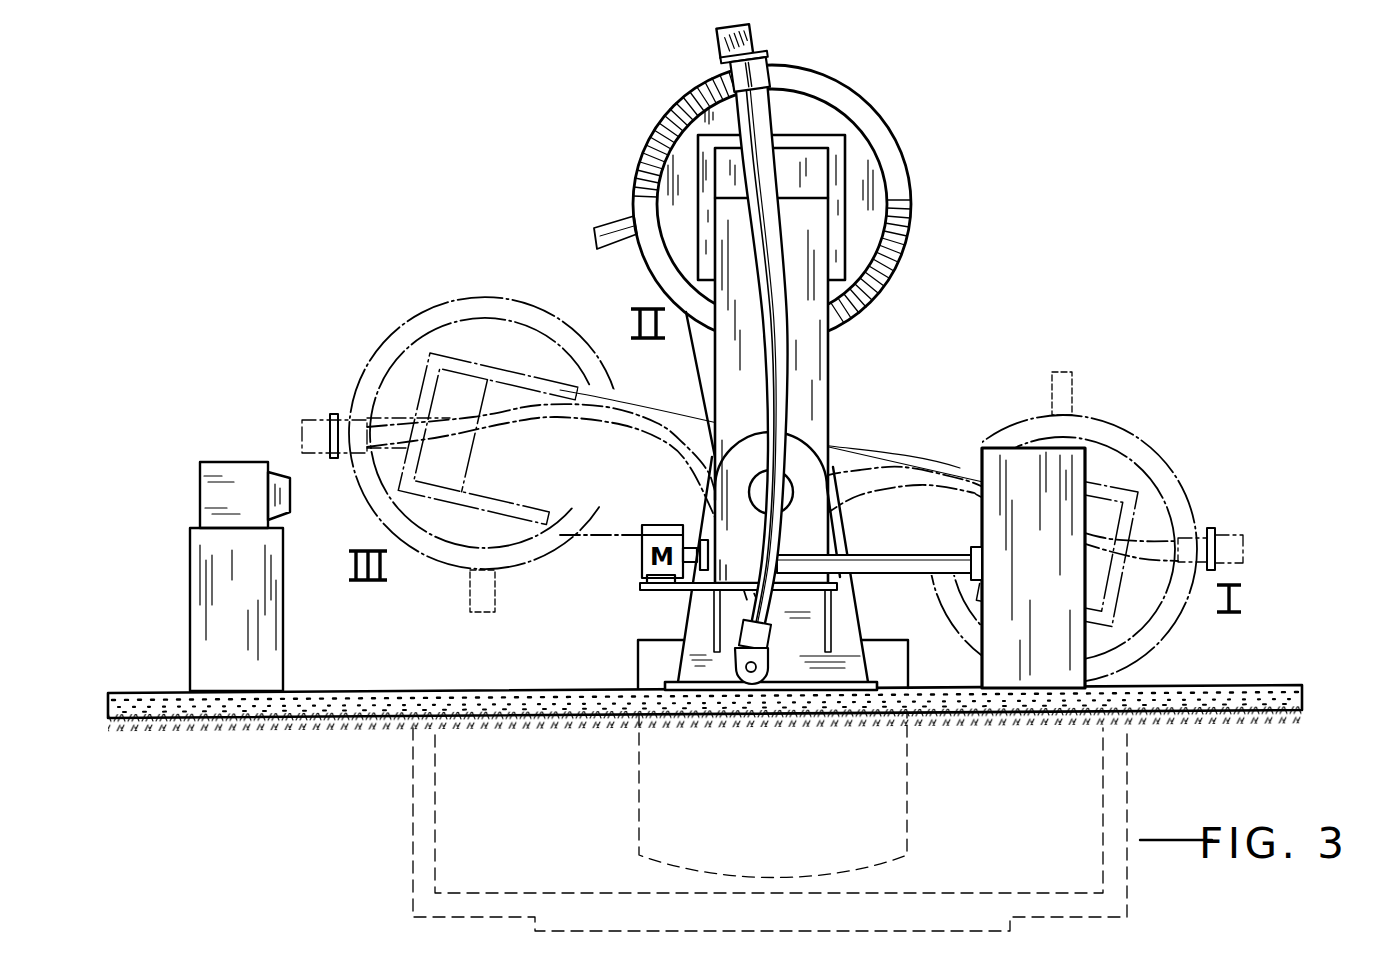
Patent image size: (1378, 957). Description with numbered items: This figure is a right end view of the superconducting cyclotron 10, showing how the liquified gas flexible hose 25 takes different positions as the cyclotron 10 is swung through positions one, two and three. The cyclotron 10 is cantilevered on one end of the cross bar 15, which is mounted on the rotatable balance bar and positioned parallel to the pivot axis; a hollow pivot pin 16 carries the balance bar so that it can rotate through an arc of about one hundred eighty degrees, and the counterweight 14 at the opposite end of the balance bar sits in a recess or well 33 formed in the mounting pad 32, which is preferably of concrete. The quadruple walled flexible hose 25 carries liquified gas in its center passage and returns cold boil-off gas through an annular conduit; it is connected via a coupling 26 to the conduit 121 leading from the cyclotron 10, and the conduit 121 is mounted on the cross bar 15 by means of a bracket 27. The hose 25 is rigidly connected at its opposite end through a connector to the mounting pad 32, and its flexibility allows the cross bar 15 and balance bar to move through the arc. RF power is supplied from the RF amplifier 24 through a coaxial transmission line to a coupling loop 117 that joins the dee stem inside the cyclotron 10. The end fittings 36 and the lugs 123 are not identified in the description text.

The superconducting cyclotron 10 is at (858, 153).
The counterweight 14 is at (787, 808).
The cross bar 15 is at (810, 334).
The hollow pivot pin 16 is at (793, 493).
The RF amplifier 24 is at (1035, 636).
The flexible hose 25 is at (785, 398).
The coupling 26 is at (760, 35).
The bracket 27 is at (767, 117).
The mounting pad 32 is at (305, 715).
The recess or well 33 is at (1128, 752).
The end coupling 36 is at (310, 428).
The coupling loop 117 is at (806, 463).
The conduit 121 is at (872, 558).
The stop lug 123 is at (1073, 390).